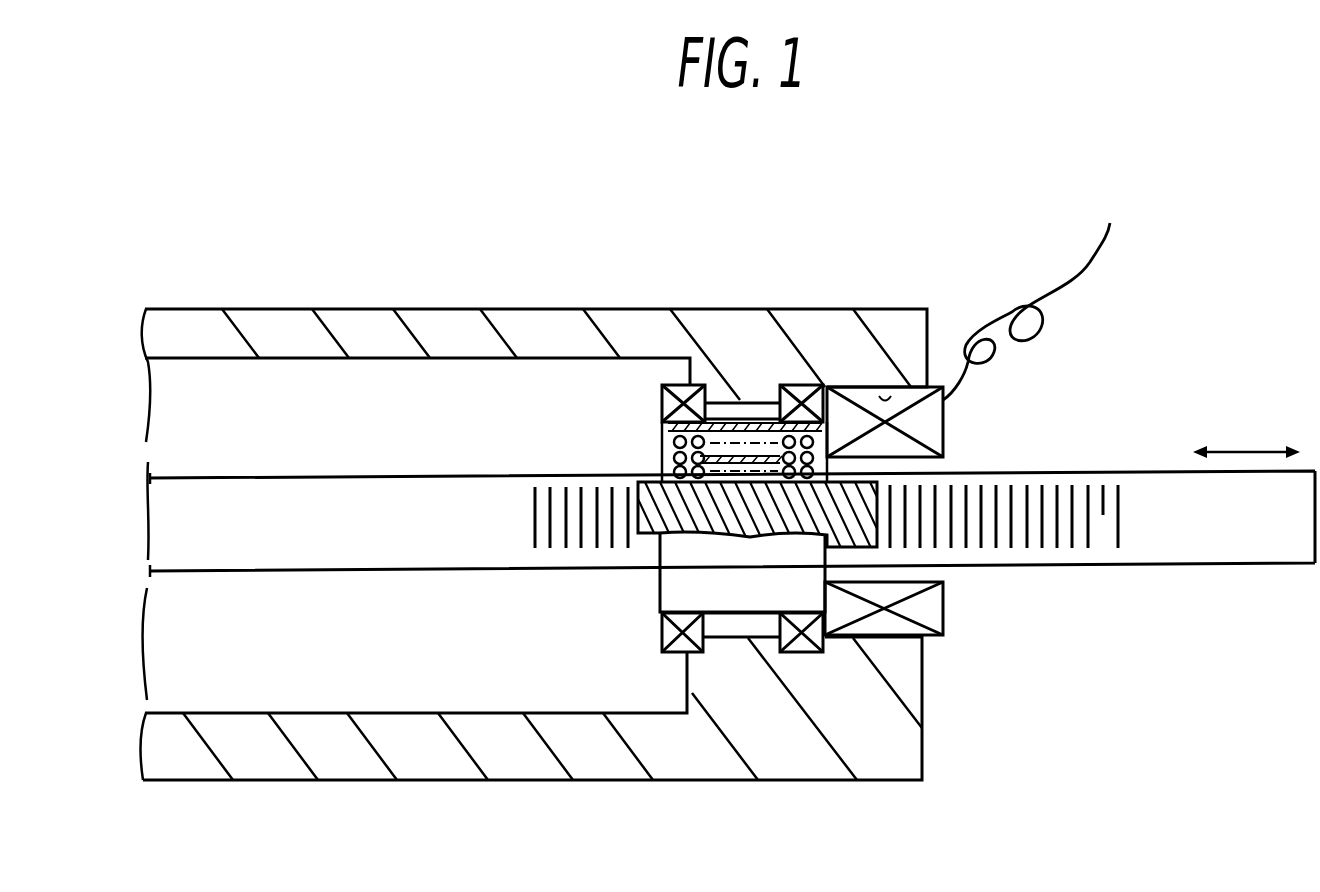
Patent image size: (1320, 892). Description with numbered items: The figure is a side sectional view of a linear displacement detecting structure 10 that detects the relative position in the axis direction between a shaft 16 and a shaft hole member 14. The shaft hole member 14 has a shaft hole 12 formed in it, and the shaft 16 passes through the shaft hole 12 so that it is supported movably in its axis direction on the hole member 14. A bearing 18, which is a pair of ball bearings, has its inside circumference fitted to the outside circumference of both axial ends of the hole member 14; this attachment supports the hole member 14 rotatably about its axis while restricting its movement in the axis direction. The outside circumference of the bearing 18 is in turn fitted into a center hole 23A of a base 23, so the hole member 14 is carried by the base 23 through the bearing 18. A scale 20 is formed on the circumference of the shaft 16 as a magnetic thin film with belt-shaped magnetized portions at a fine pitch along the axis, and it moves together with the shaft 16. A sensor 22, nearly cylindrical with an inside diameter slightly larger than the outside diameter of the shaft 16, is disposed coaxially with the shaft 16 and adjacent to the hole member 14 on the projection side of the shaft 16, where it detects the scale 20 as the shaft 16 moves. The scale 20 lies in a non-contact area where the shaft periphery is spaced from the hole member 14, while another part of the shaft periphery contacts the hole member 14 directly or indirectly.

The linear displacement detecting structure 10 is at (540, 273).
The shaft hole 12 is at (648, 537).
The shaft hole member 14 is at (662, 437).
The shaft 16 is at (1263, 567).
The bearing 18 is at (800, 380).
The scale 20 is at (1062, 565).
The sensor 22 is at (933, 607).
The base 23 is at (785, 795).
The center hole 23A is at (873, 387).